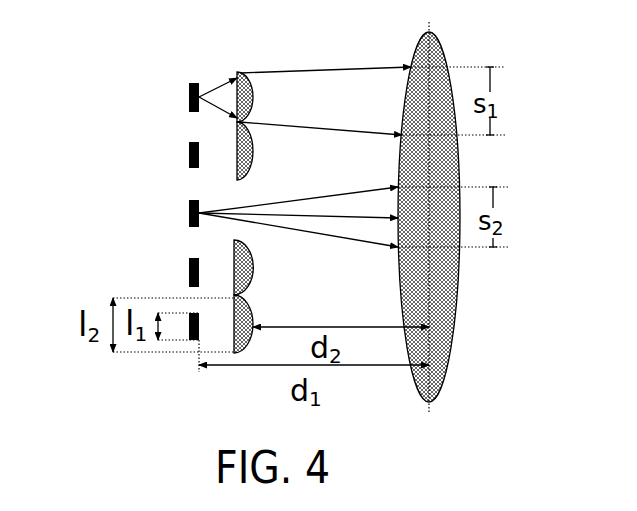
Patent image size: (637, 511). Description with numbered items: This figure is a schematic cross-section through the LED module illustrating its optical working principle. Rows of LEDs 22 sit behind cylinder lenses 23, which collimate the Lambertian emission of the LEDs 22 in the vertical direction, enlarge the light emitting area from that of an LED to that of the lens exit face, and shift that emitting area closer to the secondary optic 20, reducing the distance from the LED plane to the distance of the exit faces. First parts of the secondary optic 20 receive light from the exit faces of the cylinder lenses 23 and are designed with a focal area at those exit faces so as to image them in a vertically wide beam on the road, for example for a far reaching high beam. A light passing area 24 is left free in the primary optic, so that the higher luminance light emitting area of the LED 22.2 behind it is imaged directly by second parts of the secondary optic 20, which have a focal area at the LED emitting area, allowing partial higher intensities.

The secondary optic 20 is at (420, 60).
The LEDs 22 is at (188, 155).
The LED 22.2 is at (188, 212).
The cylinder lenses 23 is at (253, 153).
The light passing area 24 is at (245, 199).